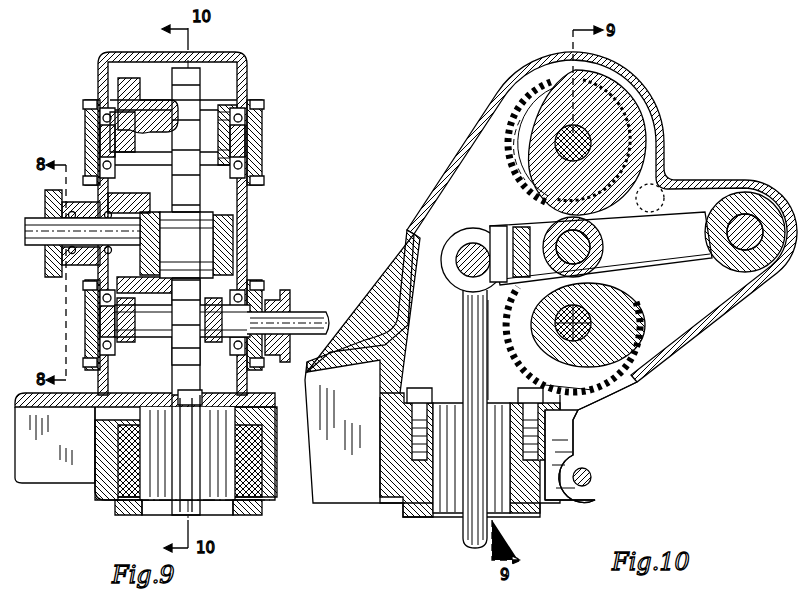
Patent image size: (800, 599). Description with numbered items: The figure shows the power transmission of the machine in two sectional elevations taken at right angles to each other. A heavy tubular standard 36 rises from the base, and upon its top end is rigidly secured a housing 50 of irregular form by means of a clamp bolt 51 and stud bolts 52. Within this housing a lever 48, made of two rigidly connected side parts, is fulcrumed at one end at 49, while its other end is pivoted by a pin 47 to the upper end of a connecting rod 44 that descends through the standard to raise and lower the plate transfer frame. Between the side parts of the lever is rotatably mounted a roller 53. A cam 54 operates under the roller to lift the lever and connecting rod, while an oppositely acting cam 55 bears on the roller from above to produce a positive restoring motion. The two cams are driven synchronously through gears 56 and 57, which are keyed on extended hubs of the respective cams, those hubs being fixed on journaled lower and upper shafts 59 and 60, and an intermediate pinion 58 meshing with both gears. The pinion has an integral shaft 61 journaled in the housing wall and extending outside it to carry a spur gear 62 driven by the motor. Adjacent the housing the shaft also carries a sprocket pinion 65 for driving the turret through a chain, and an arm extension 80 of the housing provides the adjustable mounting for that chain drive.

In FIG. 9, the tubular standard 36 is at (260, 512).
In FIG. 10, the tubular standard 36 is at (550, 508).
In FIG. 10, the connecting rod 44 is at (468, 530).
In FIG. 10, the pin 47 is at (467, 262).
In FIG. 9, the lever 48 is at (248, 205).
In FIG. 10, the lever 48 is at (673, 225).
In FIG. 10, the fulcrum 49 is at (747, 242).
In FIG. 9, the housing 50 is at (105, 488).
In FIG. 10, the housing 50 is at (713, 323).
In FIG. 10, the clamp bolt 51 is at (591, 478).
In FIG. 10, the stud bolts 52 is at (528, 400).
In FIG. 9, the roller 53 is at (190, 252).
In FIG. 10, the roller 53 is at (603, 250).
In FIG. 9, the cam 54 is at (197, 317).
In FIG. 10, the cam 54 is at (640, 325).
In FIG. 9, the cam 55 is at (190, 147).
In FIG. 10, the cam 55 is at (635, 135).
In FIG. 9, the gear 56 is at (104, 414).
In FIG. 10, the gear 56 is at (617, 370).
In FIG. 9, the gear 57 is at (121, 90).
In FIG. 10, the gear 57 is at (595, 225).
In FIG. 9, the intermediate pinion 58 is at (103, 268).
In FIG. 10, the intermediate pinion 58 is at (521, 115).
In FIG. 9, the lower shaft 59 is at (320, 315).
In FIG. 10, the lower shaft 59 is at (598, 310).
In FIG. 9, the upper shaft 60 is at (262, 152).
In FIG. 10, the upper shaft 60 is at (583, 138).
In FIG. 9, the integral shaft 61 is at (37, 245).
In FIG. 9, the spur gear 62 is at (46, 193).
In FIG. 9, the sprocket pinion 65 is at (290, 302).
In FIG. 9, the arm extension 80 is at (42, 472).
In FIG. 10, the arm extension 80 is at (335, 490).